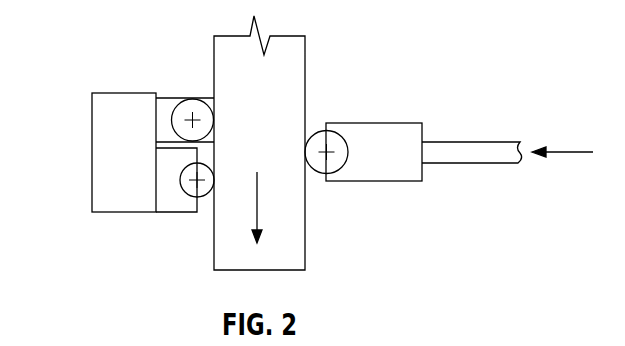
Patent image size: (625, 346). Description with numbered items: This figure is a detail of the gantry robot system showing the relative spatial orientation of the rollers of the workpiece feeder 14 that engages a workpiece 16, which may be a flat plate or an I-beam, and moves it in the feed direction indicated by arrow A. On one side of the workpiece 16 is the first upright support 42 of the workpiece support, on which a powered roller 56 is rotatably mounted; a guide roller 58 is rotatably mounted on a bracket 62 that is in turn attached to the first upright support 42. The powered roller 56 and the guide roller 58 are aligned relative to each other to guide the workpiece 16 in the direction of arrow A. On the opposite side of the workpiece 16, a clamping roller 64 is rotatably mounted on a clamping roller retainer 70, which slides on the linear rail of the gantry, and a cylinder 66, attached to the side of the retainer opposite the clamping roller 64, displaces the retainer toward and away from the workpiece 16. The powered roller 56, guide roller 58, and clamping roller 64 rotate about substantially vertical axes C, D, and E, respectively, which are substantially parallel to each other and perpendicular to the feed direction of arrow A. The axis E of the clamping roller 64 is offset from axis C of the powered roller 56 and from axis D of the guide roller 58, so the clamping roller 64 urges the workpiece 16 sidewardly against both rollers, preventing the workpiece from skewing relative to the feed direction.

The workpiece feeder 14 is at (388, 121).
The workpiece 16 is at (295, 53).
The first upright support 42 is at (105, 142).
The powered roller 56 is at (193, 100).
The guide roller 58 is at (192, 192).
The bracket 62 is at (163, 203).
The clamping roller 64 is at (312, 170).
The cylinder 66 is at (458, 150).
The clamping roller retainer 70 is at (405, 172).
The arrow indicating first direction A is at (262, 223).
The rotational axis of powered roller C is at (207, 105).
The rotational axis of guide roller D is at (204, 164).
The rotational axis of clamping roller E is at (330, 152).